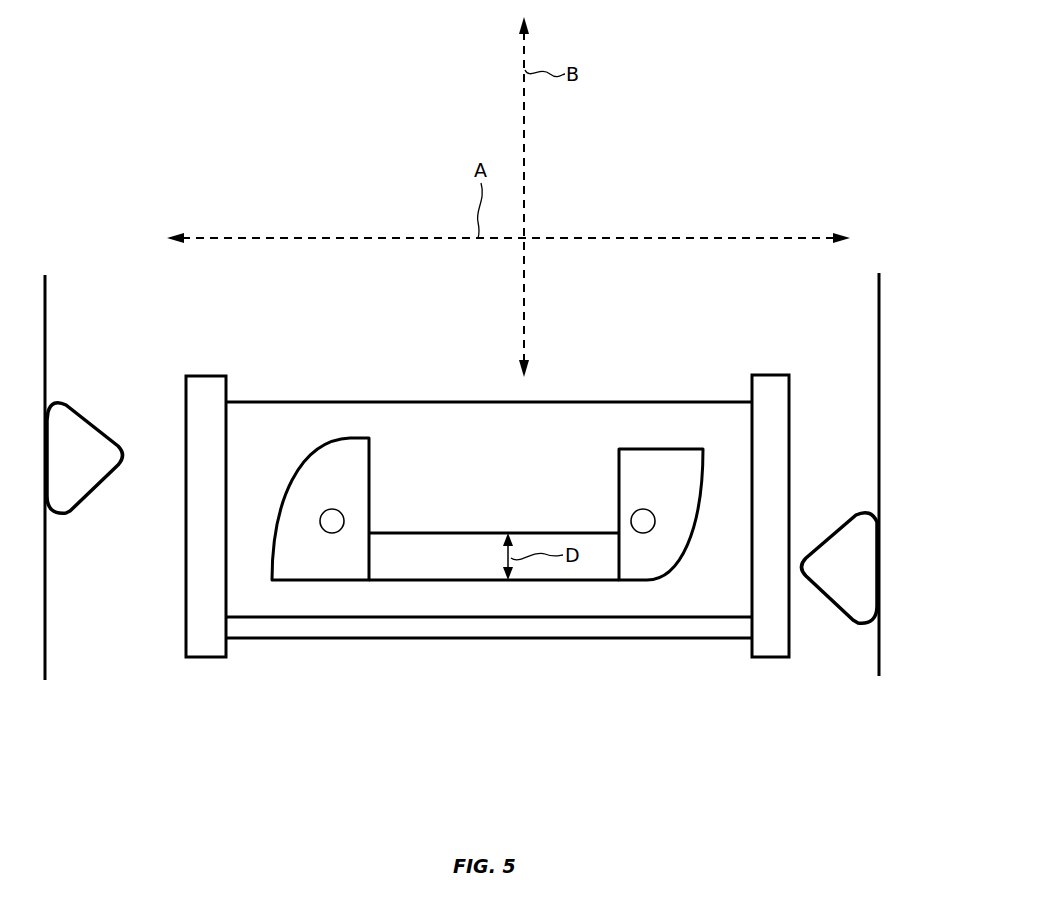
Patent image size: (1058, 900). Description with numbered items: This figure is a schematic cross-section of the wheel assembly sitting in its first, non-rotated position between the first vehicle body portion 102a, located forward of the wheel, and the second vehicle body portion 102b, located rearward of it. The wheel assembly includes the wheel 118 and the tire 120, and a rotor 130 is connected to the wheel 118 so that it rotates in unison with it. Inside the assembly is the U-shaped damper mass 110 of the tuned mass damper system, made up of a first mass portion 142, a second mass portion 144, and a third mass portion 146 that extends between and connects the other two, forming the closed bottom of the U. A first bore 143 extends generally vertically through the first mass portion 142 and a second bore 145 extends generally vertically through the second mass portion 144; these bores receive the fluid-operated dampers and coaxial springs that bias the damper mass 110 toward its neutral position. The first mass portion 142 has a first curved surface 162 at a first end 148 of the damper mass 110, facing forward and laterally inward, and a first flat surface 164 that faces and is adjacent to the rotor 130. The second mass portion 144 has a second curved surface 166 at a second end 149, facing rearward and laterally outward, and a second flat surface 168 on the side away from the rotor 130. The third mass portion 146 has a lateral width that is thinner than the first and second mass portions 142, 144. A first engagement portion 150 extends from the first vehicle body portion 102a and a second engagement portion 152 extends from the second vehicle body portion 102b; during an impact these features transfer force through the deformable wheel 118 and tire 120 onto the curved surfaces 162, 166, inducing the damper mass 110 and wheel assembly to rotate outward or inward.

The first vehicle body portion 102a is at (45, 388).
The second vehicle body portion 102b is at (879, 331).
The damper mass 110 is at (286, 452).
The wheel 118 is at (428, 424).
The tire 120 is at (212, 615).
The rotor 130 is at (639, 636).
The first mass portion 142 is at (322, 478).
The first bore 143 is at (344, 521).
The second mass portion 144 is at (690, 470).
The second bore 145 is at (631, 521).
The third mass portion 146 is at (587, 563).
The first end 148 is at (330, 405).
The second end 149 is at (675, 413).
The first engagement portion 150 is at (75, 513).
The second engagement portion 152 is at (850, 609).
The first curved surface 162 is at (277, 495).
The first flat surface 164 is at (316, 596).
The second curved surface 166 is at (700, 546).
The second flat surface 168 is at (630, 433).